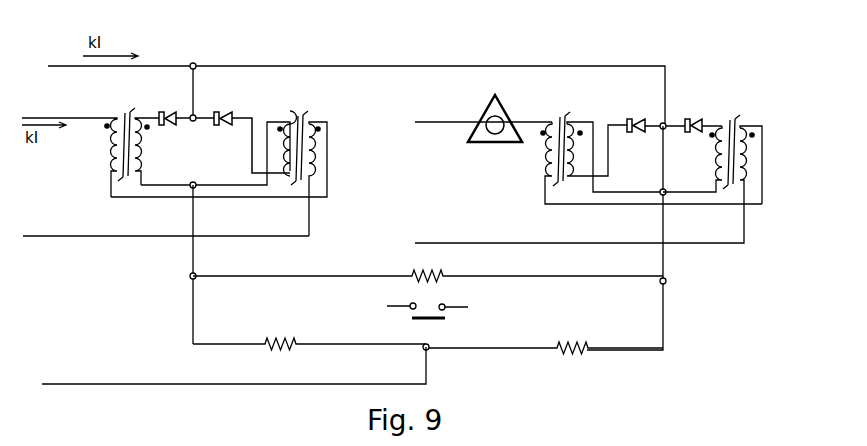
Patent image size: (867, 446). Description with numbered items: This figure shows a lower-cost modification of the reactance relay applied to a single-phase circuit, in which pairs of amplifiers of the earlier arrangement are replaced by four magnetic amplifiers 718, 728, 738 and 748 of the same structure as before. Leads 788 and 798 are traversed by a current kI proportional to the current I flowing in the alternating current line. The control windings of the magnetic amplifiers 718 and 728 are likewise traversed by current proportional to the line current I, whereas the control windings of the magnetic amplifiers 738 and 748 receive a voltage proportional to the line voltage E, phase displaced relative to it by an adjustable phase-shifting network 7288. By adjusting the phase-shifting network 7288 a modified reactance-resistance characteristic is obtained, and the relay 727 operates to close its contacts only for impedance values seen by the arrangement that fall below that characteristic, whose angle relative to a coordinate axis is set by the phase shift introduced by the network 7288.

The lead 788 is at (158, 64).
The magnetic amplifier 718 is at (128, 104).
The magnetic amplifier 728 is at (298, 108).
The phase-shifting network 7288 is at (485, 107).
The magnetic amplifier 738 is at (558, 99).
The magnetic amplifier 748 is at (728, 120).
The relay 727 is at (437, 296).
The lead 798 is at (122, 379).